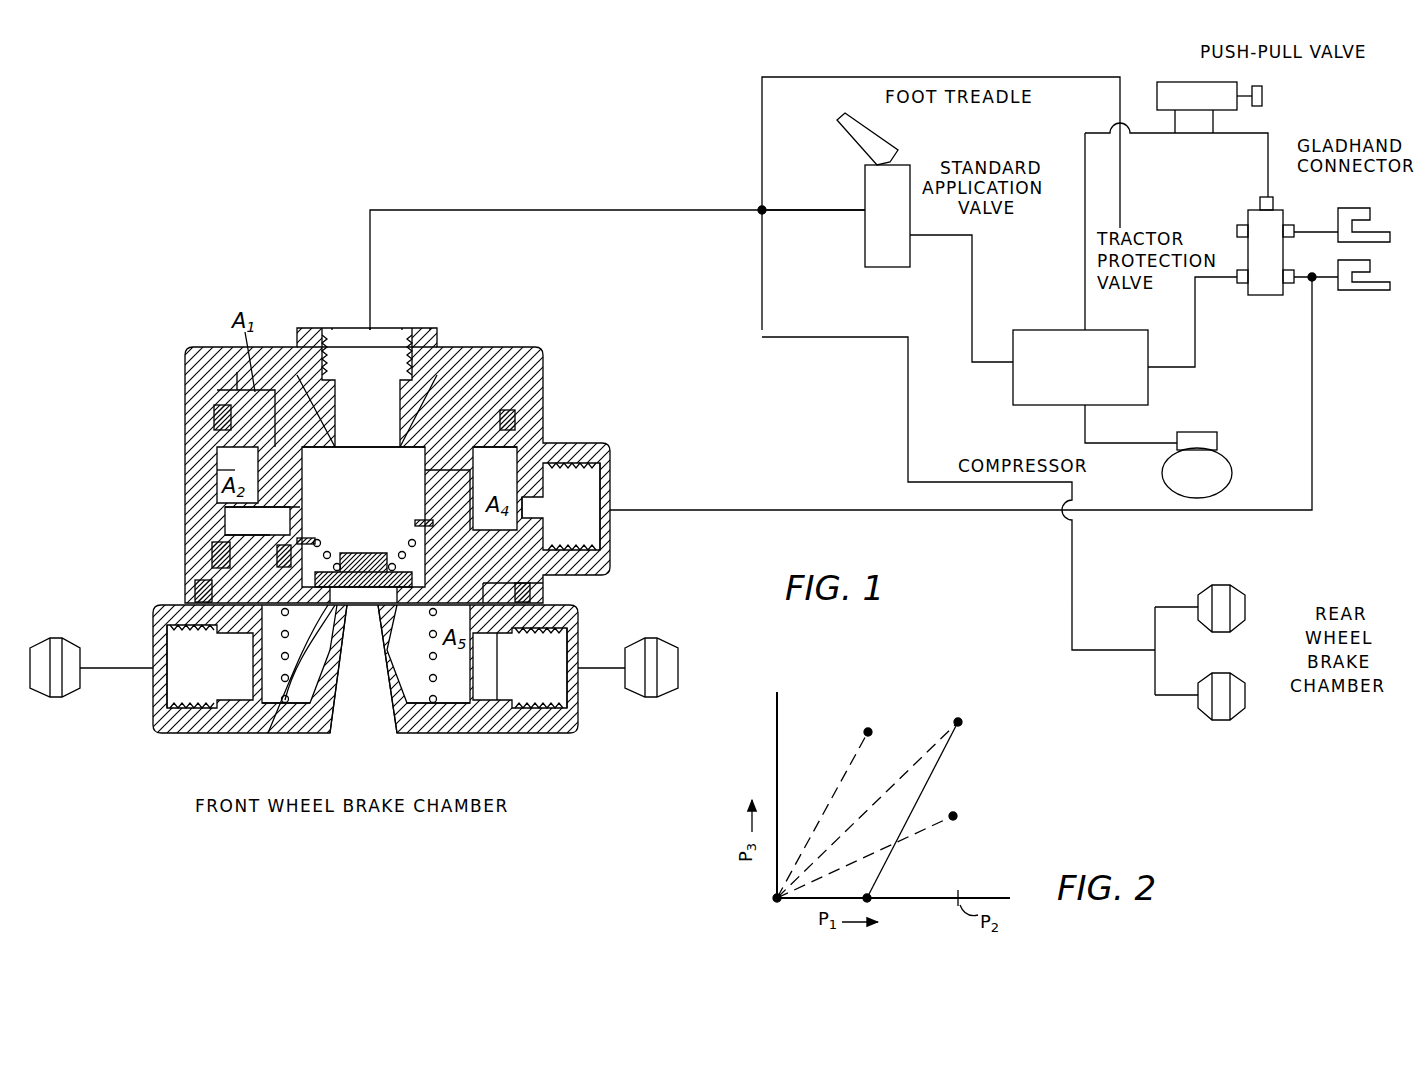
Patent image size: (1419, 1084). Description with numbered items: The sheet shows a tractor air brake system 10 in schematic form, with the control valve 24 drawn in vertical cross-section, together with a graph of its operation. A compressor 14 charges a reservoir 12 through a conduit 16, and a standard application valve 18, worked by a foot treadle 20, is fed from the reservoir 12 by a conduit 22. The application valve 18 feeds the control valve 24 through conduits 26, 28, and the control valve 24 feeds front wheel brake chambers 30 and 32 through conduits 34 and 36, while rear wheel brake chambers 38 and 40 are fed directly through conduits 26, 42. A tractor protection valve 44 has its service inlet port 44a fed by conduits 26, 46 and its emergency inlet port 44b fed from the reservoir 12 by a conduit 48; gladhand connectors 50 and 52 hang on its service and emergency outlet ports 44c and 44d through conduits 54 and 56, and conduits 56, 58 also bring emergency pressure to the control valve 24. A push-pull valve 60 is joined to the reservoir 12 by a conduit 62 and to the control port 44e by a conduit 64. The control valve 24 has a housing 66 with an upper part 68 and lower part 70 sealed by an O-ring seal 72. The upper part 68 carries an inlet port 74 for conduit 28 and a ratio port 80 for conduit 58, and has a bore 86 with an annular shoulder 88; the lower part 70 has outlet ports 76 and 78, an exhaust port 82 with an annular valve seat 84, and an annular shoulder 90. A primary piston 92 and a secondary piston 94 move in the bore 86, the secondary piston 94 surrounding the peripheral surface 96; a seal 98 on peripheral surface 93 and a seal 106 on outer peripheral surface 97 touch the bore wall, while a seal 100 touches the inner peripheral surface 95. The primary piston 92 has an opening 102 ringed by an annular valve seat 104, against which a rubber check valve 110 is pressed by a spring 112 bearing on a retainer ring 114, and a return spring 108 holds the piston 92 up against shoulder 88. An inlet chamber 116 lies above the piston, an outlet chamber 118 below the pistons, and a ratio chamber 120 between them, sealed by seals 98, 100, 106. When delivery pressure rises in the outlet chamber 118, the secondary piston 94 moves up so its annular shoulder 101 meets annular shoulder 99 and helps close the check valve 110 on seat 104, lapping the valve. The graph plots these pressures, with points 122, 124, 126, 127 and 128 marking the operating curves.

In FIG. 1, the tractor air brake system 10 is at (617, 176).
In FIG. 1, the reservoir 12 is at (1053, 406).
In FIG. 1, the compressor 14 is at (1162, 470).
In FIG. 1, the conduit 16 is at (1088, 440).
In FIG. 1, the standard application valve 18 is at (910, 232).
In FIG. 1, the foot treadle 20 is at (873, 142).
In FIG. 1, the conduit 22 is at (975, 303).
In FIG. 1, the control valve 24 is at (466, 336).
In FIG. 1, the conduit 26 is at (838, 212).
In FIG. 1, the conduit 28 is at (572, 212).
In FIG. 1, the front wheel brake chamber 30 is at (68, 692).
In FIG. 1, the front wheel brake chamber 32 is at (640, 692).
In FIG. 1, the conduit 34 is at (108, 668).
In FIG. 1, the conduit 36 is at (588, 665).
In FIG. 1, the rear wheel brake chamber 38 is at (1240, 615).
In FIG. 1, the rear wheel brake chamber 40 is at (1240, 690).
In FIG. 1, the conduit 42 is at (905, 412).
In FIG. 1, the tractor protection valve 44 is at (1268, 300).
In FIG. 1, the service inlet port 44a is at (1237, 228).
In FIG. 1, the emergency inlet port 44b is at (1240, 283).
In FIG. 1, the service outlet port 44c is at (1290, 238).
In FIG. 1, the emergency outlet port 44d is at (1276, 285).
In FIG. 1, the control port 44e is at (1264, 197).
In FIG. 1, the conduit 46 is at (1000, 77).
In FIG. 1, the conduit 48 is at (1195, 322).
In FIG. 1, the gladhand connector 50 is at (1372, 195).
In FIG. 1, the gladhand connector 52 is at (1385, 282).
In FIG. 1, the conduit 54 is at (1318, 230).
In FIG. 1, the conduit 56 is at (1314, 284).
In FIG. 1, the conduit 58 is at (1312, 415).
In FIG. 1, the push-pull valve 60 is at (1180, 82).
In FIG. 1, the conduit 62 is at (1087, 238).
In FIG. 1, the conduit 64 is at (1255, 133).
In FIG. 1, the housing 66 is at (545, 432).
In FIG. 1, the upper housing part 68 is at (540, 398).
In FIG. 1, the lower housing part 70 is at (465, 730).
In FIG. 1, the O-ring seal 72 is at (545, 600).
In FIG. 1, the inlet port 74 is at (402, 346).
In FIG. 1, the outlet port 76 is at (165, 694).
In FIG. 1, the outlet port 78 is at (560, 705).
In FIG. 1, the ratio port 80 is at (612, 478).
In FIG. 1, the exhaust port 82 is at (380, 728).
In FIG. 1, the annular valve seat 84 is at (301, 669).
In FIG. 1, the bore 86 is at (213, 480).
In FIG. 1, the annular shoulder 88 is at (215, 392).
In FIG. 1, the annular shoulder 90 is at (530, 592).
In FIG. 1, the primary piston 92 is at (535, 378).
In FIG. 1, the peripheral surface 93 is at (213, 443).
In FIG. 1, the secondary piston 94 is at (250, 540).
In FIG. 1, the inner peripheral surface 95 is at (288, 545).
In FIG. 1, the peripheral surface 96 is at (275, 510).
In FIG. 1, the outer peripheral surface 97 is at (222, 558).
In FIG. 1, the seal 98 is at (214, 418).
In FIG. 1, the annular shoulder 99 is at (548, 520).
In FIG. 1, the seal 100 is at (306, 538).
In FIG. 1, the annular shoulder 101 is at (432, 492).
In FIG. 1, the opening 102 is at (395, 605).
In FIG. 1, the annular valve seat 104 is at (305, 656).
In FIG. 1, the seal 106 is at (200, 590).
In FIG. 1, the return spring 108 is at (290, 700).
In FIG. 1, the check valve 110 is at (355, 568).
In FIG. 1, the spring 112 is at (323, 555).
In FIG. 1, the retainer ring 114 is at (420, 520).
In FIG. 1, the inlet chamber 116 is at (363, 462).
In FIG. 1, the outlet chamber 118 is at (443, 688).
In FIG. 1, the ratio chamber 120 is at (495, 464).
In FIG. 2, the origin point 122 is at (773, 900).
In FIG. 2, the crack pressure point 124 is at (872, 895).
In FIG. 2, the full pressure point 126 is at (962, 720).
In FIG. 2, the reduced output curve 127 is at (957, 814).
In FIG. 2, the full output curve 128 is at (872, 730).